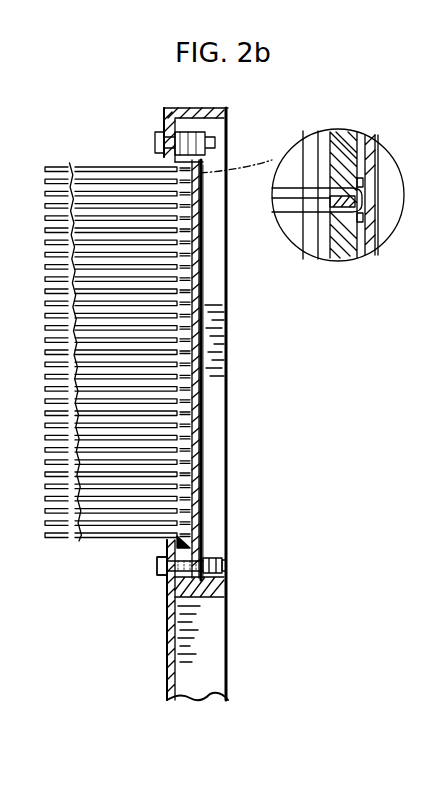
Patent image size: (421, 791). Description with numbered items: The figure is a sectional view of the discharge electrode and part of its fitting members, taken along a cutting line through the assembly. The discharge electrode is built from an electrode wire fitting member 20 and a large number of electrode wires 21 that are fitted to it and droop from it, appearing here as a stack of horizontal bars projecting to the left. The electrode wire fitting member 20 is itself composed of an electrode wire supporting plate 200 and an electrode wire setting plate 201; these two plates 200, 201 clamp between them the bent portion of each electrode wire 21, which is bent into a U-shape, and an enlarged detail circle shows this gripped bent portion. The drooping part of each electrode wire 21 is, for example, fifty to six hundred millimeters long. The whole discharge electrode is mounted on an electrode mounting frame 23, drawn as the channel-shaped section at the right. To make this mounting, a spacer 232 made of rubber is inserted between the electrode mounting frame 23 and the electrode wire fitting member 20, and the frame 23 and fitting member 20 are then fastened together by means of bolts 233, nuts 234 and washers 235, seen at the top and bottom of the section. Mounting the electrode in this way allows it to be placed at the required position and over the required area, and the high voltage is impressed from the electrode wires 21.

The electrode wire fitting member 20 is at (203, 398).
The electrode wires 21 is at (105, 537).
The electrode mounting frame 23 is at (185, 108).
The electrode wire supporting plate 200 is at (215, 589).
The electrode wire setting plate 201 is at (205, 525).
The spacer 232 is at (168, 585).
The bolts 233 is at (160, 580).
The nuts 234 is at (203, 553).
The washers 235 is at (208, 575).